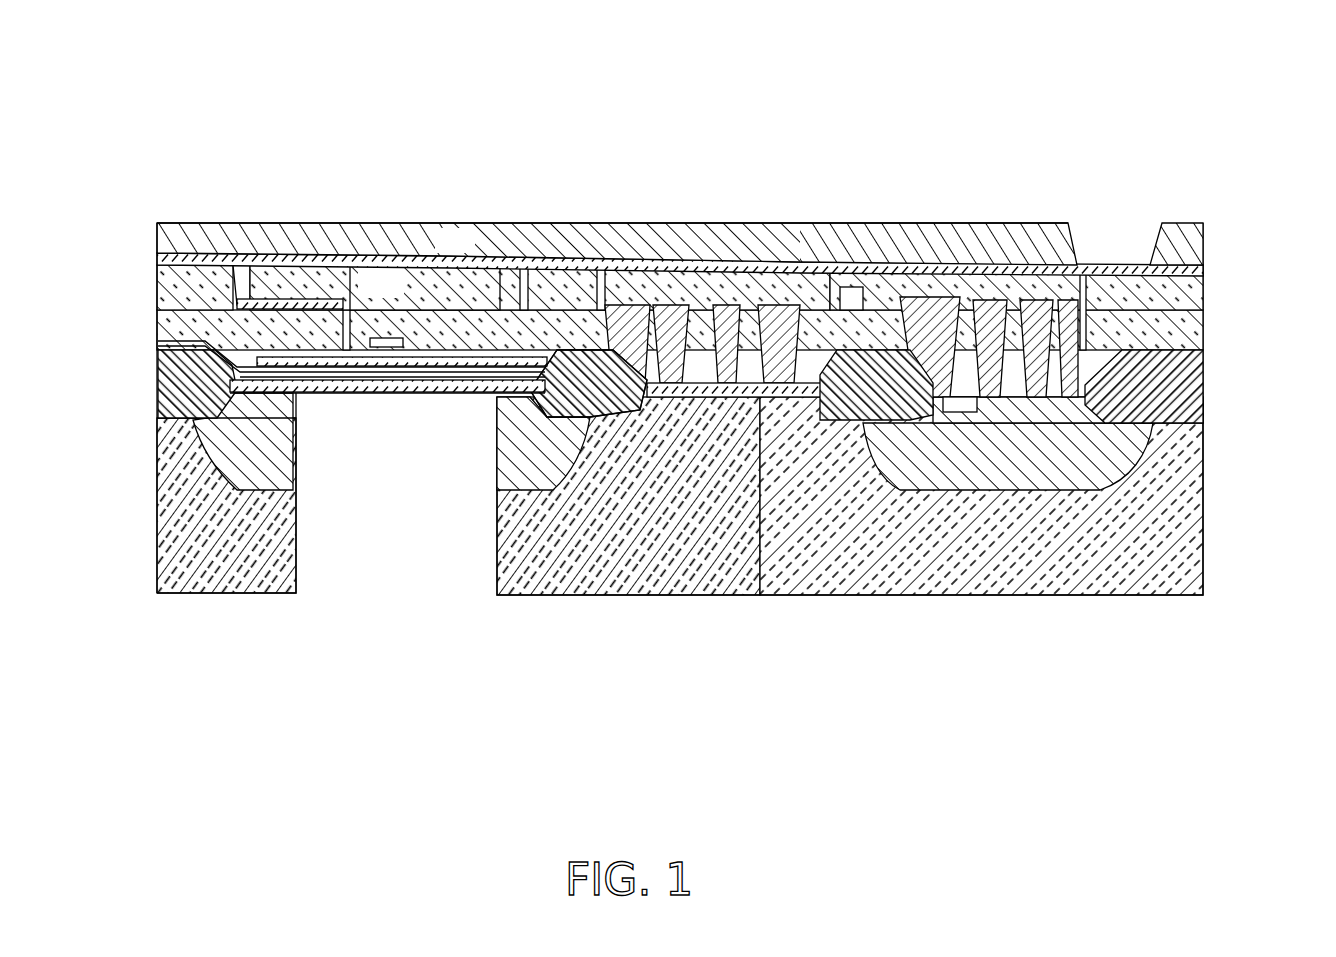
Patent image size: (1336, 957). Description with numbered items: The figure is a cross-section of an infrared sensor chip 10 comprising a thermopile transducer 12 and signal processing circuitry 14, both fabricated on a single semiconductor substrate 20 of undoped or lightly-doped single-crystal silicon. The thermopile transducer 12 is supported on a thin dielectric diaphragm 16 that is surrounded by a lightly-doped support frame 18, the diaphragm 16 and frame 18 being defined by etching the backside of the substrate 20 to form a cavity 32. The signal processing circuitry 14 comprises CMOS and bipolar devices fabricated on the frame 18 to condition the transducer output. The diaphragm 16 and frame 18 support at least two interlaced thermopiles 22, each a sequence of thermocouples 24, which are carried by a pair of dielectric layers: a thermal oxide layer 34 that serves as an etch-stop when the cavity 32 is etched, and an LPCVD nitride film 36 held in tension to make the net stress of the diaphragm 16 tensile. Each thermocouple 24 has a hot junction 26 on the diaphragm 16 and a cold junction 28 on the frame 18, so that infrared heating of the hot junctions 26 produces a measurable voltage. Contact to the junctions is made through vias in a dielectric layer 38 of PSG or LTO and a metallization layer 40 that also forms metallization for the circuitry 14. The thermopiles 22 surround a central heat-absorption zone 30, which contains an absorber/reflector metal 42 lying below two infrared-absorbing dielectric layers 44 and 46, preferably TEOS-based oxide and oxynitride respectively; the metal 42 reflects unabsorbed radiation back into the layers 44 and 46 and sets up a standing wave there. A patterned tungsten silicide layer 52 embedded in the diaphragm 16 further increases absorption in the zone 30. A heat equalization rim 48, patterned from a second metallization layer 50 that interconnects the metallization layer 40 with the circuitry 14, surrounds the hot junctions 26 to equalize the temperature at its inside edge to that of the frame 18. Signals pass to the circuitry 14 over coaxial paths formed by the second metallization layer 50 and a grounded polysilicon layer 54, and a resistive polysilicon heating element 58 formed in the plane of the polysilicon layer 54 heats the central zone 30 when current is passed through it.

The infrared sensor chip 10 is at (118, 168).
The thermopile transducer 12 is at (566, 158).
The signal processing circuitry 14 is at (882, 180).
The diaphragm 16 is at (390, 223).
The support frame 18 is at (845, 603).
The semiconductor substrate 20 is at (1035, 585).
The thermopile 22 is at (157, 360).
The thermocouple 24 is at (317, 360).
The hot junction 26 is at (350, 350).
The cold junction 28 is at (637, 410).
The central heat-absorption zone 30 is at (390, 390).
The cavity 32 is at (372, 615).
The thermal oxide layer 34 is at (300, 397).
The nitride film 36 is at (483, 373).
The dielectric layer 38 is at (585, 400).
The metallization layer 40 is at (205, 321).
The absorber/reflector metal 42 is at (455, 241).
The dielectric layer 44 is at (157, 287).
The dielectric layer 46 is at (192, 223).
The heat equalization rim 48 is at (495, 264).
The second metallization layer 50 is at (160, 258).
The tungsten silicide layer 52 is at (403, 262).
The polysilicon layer 54 is at (562, 264).
The heating element 58 is at (385, 352).